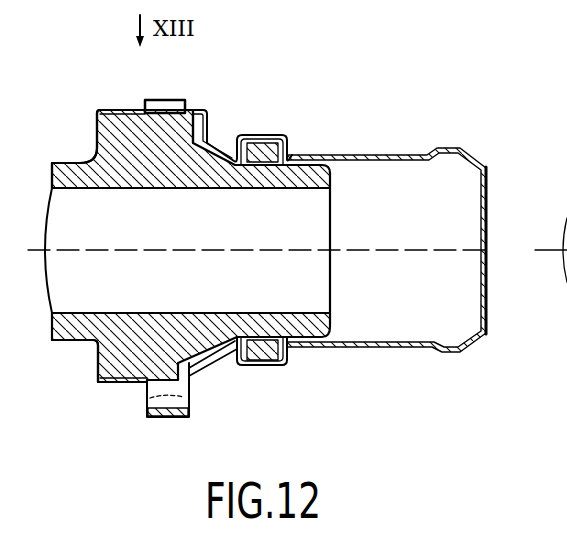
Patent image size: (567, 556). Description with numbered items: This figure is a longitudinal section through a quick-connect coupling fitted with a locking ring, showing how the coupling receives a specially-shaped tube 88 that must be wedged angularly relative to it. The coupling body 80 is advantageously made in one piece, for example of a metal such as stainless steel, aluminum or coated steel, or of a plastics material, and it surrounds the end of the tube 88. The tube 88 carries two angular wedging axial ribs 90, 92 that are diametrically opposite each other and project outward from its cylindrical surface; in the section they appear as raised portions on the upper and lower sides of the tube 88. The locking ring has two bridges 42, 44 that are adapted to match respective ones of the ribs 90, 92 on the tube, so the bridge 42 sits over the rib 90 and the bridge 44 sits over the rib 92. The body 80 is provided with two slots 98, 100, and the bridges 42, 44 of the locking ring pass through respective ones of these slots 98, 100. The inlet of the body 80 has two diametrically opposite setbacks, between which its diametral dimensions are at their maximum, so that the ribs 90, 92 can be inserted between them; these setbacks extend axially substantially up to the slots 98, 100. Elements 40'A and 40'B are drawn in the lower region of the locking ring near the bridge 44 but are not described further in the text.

The body 80 is at (383, 347).
The tube 88 is at (76, 176).
The angular wedging axial rib 90 is at (131, 130).
The bridge 42 is at (166, 98).
The slot 98 is at (190, 108).
The angular wedging axial rib 92 is at (98, 352).
The bridge 44 is at (179, 418).
The contact plate 40'A is at (150, 436).
The contact element 40'B is at (136, 409).
The slot 100 is at (190, 394).